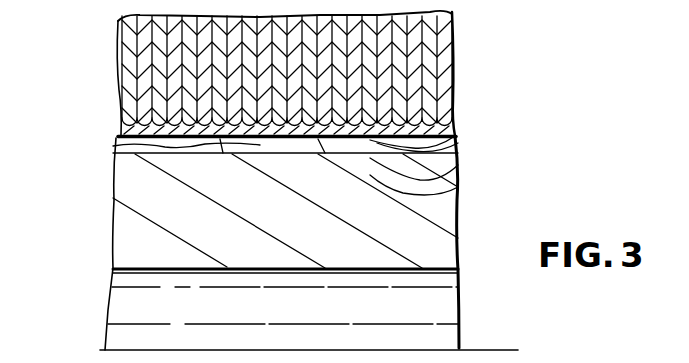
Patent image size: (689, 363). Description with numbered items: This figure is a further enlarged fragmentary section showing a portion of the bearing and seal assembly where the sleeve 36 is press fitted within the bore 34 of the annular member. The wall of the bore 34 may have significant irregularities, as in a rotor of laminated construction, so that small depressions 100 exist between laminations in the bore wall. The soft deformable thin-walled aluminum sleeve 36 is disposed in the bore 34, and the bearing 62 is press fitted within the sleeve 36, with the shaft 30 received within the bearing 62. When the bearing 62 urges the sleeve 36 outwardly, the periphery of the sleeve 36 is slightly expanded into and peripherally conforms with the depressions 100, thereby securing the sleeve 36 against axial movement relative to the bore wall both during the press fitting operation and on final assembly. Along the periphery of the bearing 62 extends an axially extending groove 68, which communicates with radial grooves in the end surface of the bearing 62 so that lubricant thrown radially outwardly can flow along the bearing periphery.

The shaft 30 is at (446, 312).
The through bore 34 is at (113, 146).
The sleeve 36 is at (460, 171).
The bearing 62 is at (446, 218).
The axially extending grooves 68 is at (459, 188).
The depressions 100 is at (455, 136).